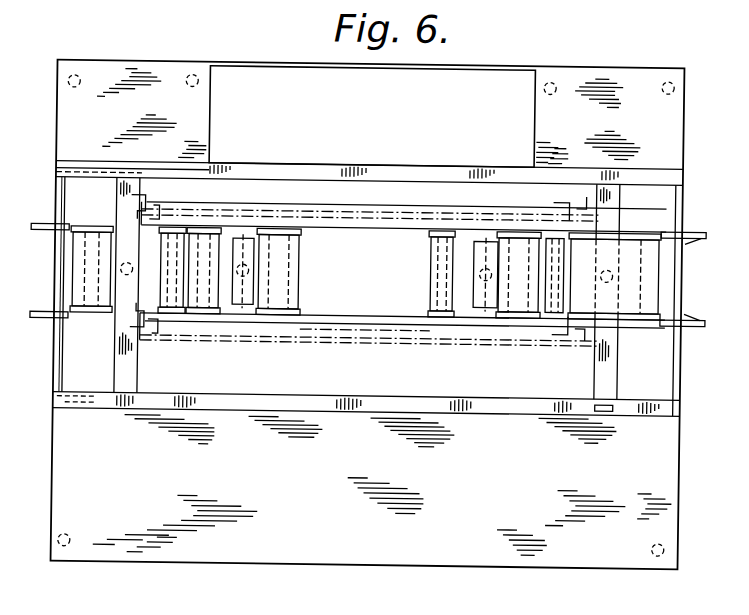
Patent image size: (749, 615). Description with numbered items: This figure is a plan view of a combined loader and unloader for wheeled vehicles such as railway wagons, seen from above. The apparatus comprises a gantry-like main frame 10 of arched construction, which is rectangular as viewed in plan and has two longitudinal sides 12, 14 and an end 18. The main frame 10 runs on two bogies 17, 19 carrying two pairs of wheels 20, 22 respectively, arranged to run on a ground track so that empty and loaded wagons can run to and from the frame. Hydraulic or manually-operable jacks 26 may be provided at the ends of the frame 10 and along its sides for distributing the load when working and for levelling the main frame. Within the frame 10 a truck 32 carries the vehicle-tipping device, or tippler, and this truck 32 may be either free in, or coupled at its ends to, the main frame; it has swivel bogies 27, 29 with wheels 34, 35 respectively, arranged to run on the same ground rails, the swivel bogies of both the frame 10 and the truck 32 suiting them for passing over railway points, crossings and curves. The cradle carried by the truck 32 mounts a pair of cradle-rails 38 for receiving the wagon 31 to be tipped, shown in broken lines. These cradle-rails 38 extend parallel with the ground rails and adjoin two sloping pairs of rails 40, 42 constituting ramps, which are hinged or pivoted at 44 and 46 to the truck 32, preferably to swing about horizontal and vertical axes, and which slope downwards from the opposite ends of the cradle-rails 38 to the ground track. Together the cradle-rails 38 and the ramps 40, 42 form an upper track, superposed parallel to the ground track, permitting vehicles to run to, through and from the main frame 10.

The main frame 10 is at (52, 406).
The longitudinal side 12 is at (352, 165).
The longitudinal side 14 is at (352, 413).
The bogie 17 is at (112, 318).
The end 18 is at (63, 210).
The bogie 19 is at (586, 330).
The wheels 20 is at (85, 231).
The wheels 22 is at (548, 232).
The jacks 26 is at (184, 78).
The bogie 27 is at (282, 322).
The bogie 29 is at (434, 320).
The wheeled vehicle 31 is at (366, 340).
The truck 32 is at (312, 286).
The wheels 34 is at (300, 238).
The wheels 35 is at (500, 232).
The cradle-rails 38 is at (363, 230).
The ramp rails 40 is at (60, 262).
The ramp rails 42 is at (704, 236).
The pivot 44 is at (58, 286).
The pivot 46 is at (690, 228).